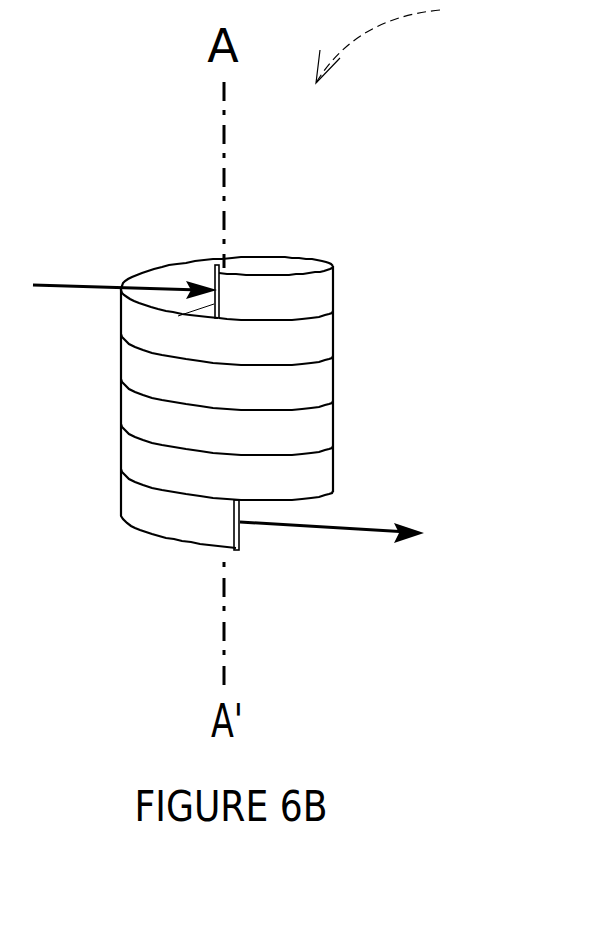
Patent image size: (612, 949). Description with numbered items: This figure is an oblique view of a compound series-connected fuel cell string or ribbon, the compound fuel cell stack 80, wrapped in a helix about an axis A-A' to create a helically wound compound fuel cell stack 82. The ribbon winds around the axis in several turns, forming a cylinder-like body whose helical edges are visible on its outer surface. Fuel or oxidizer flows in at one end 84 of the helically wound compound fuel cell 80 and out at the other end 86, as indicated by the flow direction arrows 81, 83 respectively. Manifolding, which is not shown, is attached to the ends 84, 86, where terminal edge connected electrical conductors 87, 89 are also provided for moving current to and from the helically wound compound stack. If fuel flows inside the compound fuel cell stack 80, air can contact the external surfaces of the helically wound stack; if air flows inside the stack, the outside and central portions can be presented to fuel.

The compound fuel cell stack 80 is at (297, 297).
The flow direction arrow 81 is at (93, 283).
The helically wound compound fuel cell stack 82 is at (400, 41).
The flow direction arrow 83 is at (350, 533).
The end 84 is at (228, 292).
The other end 86 is at (220, 527).
The terminal edge connected electrical conductor 87 is at (212, 262).
The terminal edge connected electrical conductor 89 is at (242, 552).